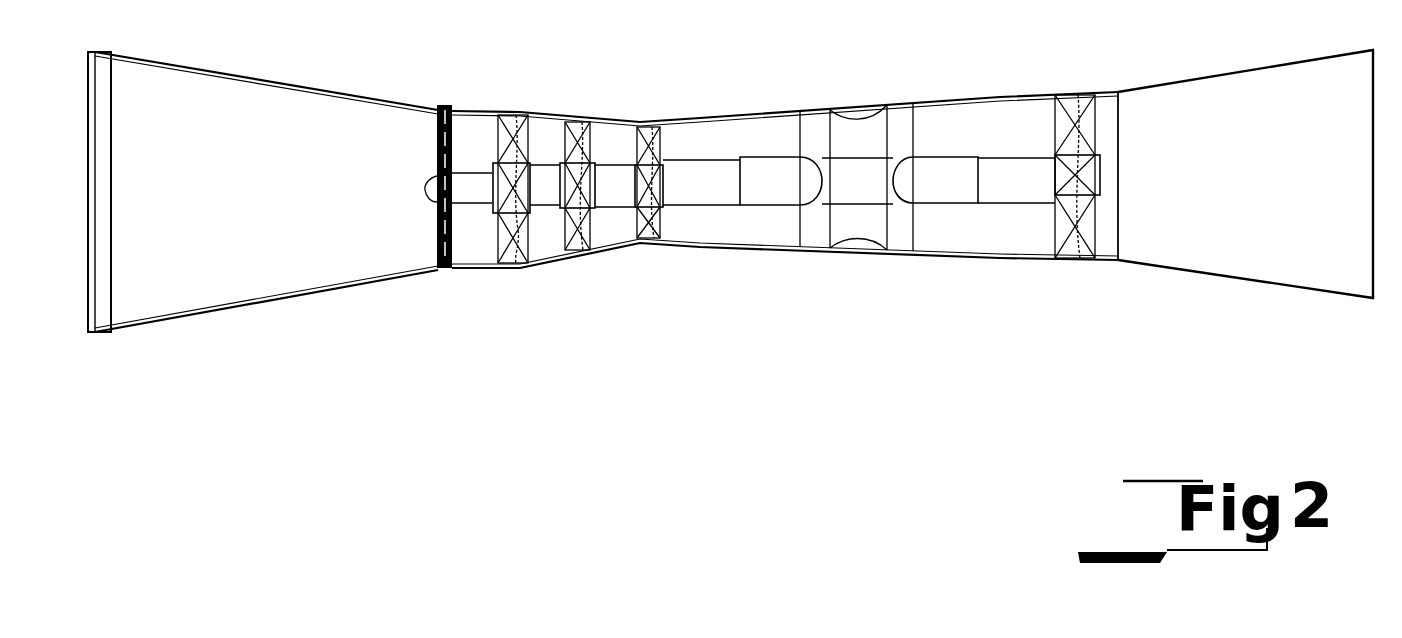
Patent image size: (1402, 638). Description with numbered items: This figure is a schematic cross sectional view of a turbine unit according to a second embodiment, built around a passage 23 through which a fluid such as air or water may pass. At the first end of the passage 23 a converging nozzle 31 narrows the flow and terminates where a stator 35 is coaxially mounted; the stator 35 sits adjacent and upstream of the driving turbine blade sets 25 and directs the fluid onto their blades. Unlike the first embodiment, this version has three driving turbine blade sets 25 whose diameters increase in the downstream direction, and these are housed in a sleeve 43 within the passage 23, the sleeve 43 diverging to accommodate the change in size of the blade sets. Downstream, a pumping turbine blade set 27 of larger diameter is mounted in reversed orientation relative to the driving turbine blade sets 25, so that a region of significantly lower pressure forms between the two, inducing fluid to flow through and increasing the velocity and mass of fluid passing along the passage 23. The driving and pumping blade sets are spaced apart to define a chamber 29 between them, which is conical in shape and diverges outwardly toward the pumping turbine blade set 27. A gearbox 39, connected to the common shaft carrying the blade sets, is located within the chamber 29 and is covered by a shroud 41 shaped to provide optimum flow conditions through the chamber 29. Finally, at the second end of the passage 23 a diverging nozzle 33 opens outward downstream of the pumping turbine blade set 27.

The passage 23 is at (762, 235).
The driving turbine blade set 25 is at (520, 263).
The pumping turbine blade set 27 is at (1090, 260).
The chamber 29 is at (1003, 235).
The converging nozzle 31 is at (280, 270).
The diverging nozzle 33 is at (1247, 267).
The stator 35 is at (452, 270).
The gearbox 39 is at (863, 220).
The shroud 41 is at (908, 237).
The sleeve 43 is at (565, 250).